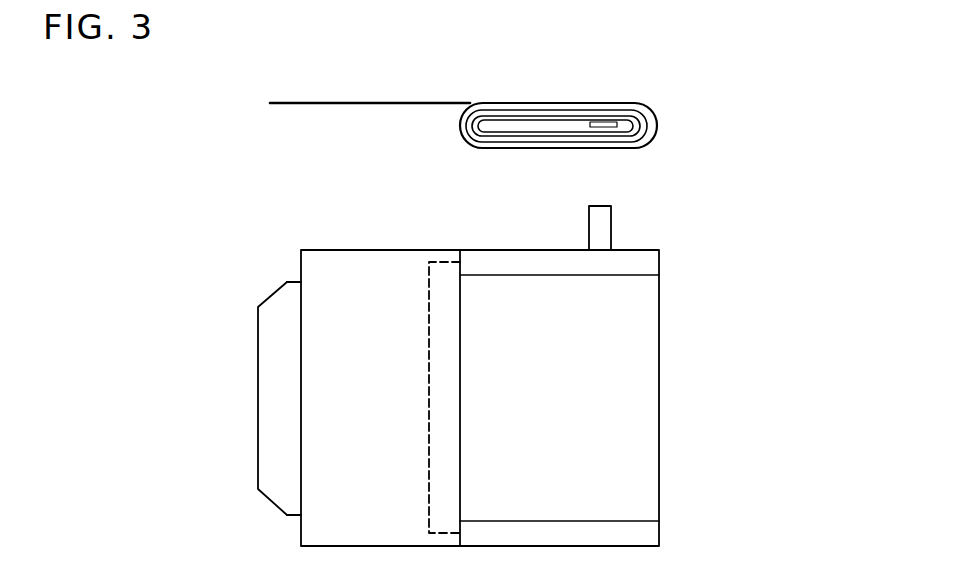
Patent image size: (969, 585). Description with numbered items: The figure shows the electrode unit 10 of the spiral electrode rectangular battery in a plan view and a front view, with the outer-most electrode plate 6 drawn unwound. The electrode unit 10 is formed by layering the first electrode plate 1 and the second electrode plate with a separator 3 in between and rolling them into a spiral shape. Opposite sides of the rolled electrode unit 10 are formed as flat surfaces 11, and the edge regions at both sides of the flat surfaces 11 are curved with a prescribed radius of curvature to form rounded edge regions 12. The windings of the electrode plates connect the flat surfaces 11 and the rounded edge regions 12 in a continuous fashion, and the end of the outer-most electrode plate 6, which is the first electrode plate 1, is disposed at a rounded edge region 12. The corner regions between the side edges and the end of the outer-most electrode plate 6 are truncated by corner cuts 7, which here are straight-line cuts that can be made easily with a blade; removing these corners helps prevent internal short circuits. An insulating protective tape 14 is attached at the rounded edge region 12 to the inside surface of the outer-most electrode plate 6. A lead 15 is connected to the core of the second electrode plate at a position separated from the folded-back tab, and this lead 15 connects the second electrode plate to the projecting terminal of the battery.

The first electrode plate 1 is at (608, 412).
The separator 3 is at (367, 105).
The outer-most electrode plate 6 is at (288, 104).
The corner cuts 7 is at (267, 283).
The electrode unit 10 is at (700, 285).
The flat surfaces 11 is at (557, 98).
The rounded edge regions 12 is at (458, 135).
The insulating protective tape 14 is at (428, 398).
The lead 15 is at (597, 125).